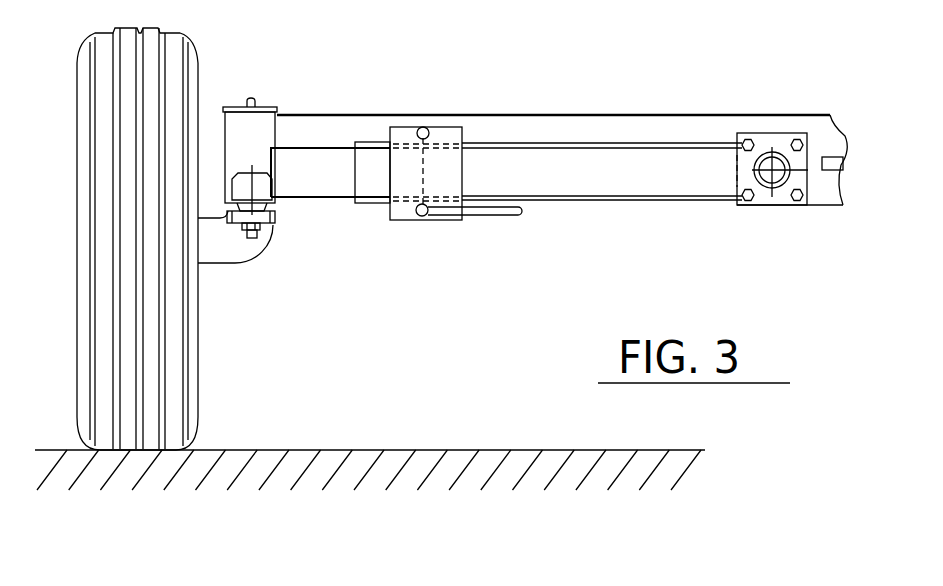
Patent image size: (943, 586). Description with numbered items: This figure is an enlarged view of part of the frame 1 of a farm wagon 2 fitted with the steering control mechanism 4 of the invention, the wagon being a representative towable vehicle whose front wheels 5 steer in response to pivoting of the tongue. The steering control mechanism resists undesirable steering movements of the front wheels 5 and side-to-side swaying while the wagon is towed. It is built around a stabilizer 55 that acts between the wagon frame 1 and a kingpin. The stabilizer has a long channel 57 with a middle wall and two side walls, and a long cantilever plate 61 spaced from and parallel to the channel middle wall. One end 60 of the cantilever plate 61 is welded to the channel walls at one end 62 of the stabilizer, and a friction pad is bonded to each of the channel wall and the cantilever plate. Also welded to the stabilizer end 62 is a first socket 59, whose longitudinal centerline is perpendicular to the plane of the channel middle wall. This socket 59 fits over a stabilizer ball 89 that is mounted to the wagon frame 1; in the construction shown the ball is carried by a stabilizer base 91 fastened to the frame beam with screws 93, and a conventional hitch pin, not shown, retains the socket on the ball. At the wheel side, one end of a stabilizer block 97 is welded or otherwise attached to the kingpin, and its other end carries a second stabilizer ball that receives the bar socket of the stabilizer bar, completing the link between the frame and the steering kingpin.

The frame 1 is at (634, 110).
The farm wagon 2 is at (455, 104).
The steering control mechanism 4 is at (546, 208).
The front wheels 5 is at (397, 242).
The stabilizer 55 is at (600, 208).
The channel 57 is at (618, 137).
The first socket 59 is at (797, 137).
The end of cantilever plate 60 is at (736, 205).
The cantilever plate 61 is at (534, 158).
The end of stabilizer 62 is at (708, 177).
The stabilizer ball 89 is at (780, 205).
The stabilizer base 91 is at (803, 155).
The screws 93 is at (788, 157).
The stabilizer block 97 is at (263, 215).